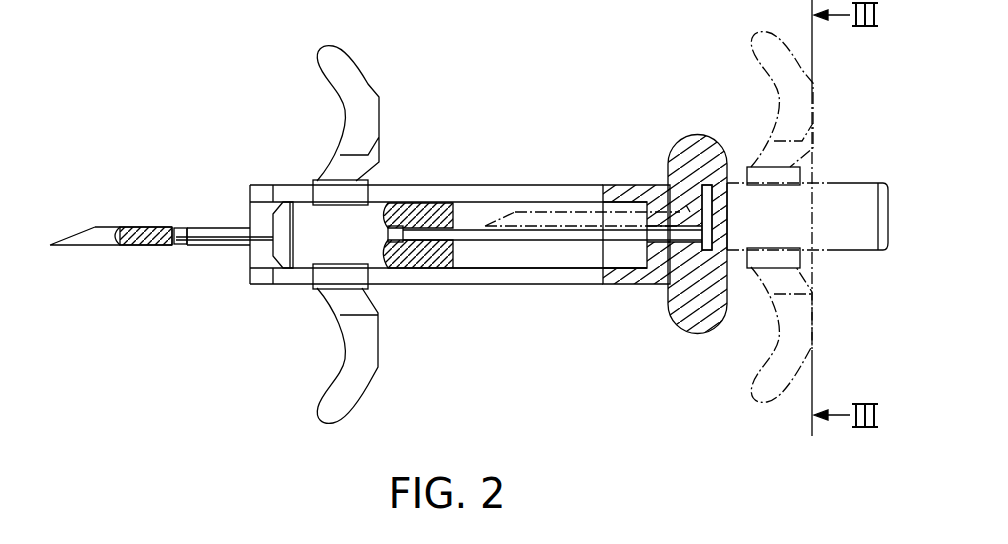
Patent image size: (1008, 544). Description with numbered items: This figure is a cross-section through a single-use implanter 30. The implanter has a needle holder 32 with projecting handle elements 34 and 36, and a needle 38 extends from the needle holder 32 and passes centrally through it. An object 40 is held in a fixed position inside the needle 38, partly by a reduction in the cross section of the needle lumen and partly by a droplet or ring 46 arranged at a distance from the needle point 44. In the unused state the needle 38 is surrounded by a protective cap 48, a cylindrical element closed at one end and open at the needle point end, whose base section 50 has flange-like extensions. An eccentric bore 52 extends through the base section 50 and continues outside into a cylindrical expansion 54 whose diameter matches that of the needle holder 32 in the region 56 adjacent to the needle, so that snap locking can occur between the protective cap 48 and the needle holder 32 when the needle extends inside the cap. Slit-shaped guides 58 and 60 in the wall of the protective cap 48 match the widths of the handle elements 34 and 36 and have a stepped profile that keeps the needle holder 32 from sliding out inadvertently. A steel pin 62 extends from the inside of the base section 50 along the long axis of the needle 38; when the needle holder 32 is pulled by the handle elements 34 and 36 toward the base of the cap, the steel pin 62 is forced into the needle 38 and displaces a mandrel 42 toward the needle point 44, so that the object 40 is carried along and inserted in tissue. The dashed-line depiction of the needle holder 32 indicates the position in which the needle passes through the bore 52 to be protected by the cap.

The single-use implanter 30 is at (262, 110).
The needle holder 32 is at (428, 268).
The handle element 34 is at (368, 103).
The handle element 36 is at (358, 376).
The needle 38 is at (212, 246).
The object 40 is at (155, 227).
The mandrel 42 is at (228, 227).
The needle point 44 is at (70, 236).
The droplet or ring 46 is at (113, 227).
The protective cap 48 is at (625, 186).
The base section 50 is at (702, 322).
The bore 52 is at (686, 210).
The cylindrical expansion 54 is at (722, 188).
The region 56 is at (291, 258).
The slit-shaped guide 58 is at (476, 185).
The slit-shaped guide 60 is at (580, 284).
The steel pin 62 is at (510, 240).